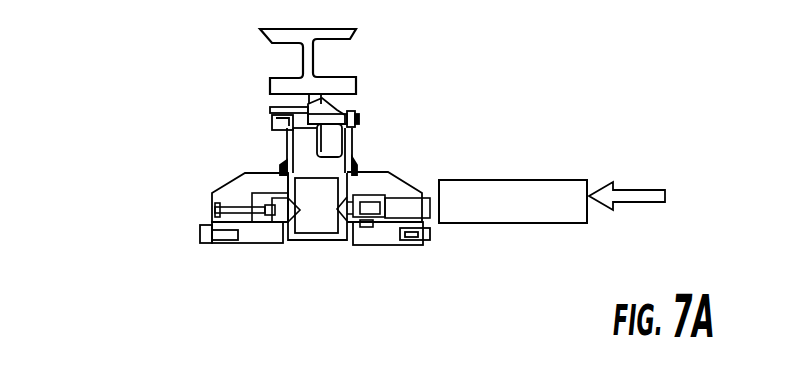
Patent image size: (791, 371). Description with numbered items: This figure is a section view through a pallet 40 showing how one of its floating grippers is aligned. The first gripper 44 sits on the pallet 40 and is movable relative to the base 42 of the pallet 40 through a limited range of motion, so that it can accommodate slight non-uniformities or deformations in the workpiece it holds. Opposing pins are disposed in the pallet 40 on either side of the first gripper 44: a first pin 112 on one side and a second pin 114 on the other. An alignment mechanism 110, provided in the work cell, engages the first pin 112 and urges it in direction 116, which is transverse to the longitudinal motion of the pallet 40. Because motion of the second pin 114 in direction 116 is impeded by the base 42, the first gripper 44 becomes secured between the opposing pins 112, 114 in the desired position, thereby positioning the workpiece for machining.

The pallet 40 is at (142, 237).
The base 42 is at (221, 186).
The first gripper 44 is at (337, 105).
The alignment mechanism 110 is at (553, 180).
The first pin 112 is at (349, 225).
The second pin 114 is at (282, 213).
The direction 116 is at (643, 188).